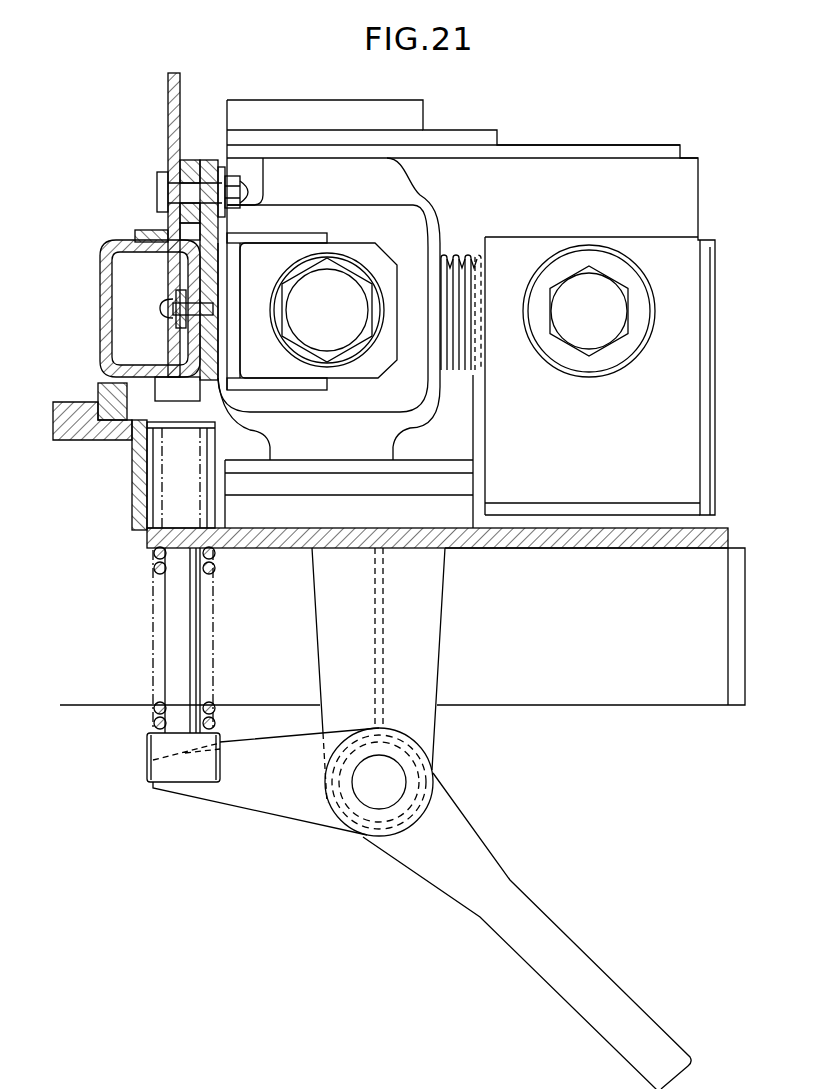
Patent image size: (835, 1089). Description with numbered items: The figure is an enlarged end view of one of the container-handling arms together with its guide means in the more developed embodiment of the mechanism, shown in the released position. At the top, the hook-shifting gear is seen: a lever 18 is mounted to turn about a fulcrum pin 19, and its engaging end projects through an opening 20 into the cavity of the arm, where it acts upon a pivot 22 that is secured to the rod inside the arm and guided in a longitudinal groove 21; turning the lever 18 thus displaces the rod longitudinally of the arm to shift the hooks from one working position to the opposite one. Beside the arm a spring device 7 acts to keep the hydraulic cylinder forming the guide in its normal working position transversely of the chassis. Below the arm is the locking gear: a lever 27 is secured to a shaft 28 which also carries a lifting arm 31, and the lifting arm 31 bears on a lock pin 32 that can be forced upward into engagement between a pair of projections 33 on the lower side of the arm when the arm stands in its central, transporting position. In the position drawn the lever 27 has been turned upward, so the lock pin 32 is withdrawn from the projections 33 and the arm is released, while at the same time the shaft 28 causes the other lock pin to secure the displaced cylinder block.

The spring device 7 is at (458, 252).
The lever 18 is at (170, 102).
The fulcrum pin 19 is at (162, 176).
The opening 20 is at (170, 256).
The longitudinal groove 21 is at (215, 310).
The pivot 22 is at (168, 308).
The lever 27 is at (470, 848).
The shaft 28 is at (378, 796).
The lifting arm 31 is at (275, 806).
The lock pin 32 is at (180, 636).
The projection 33 is at (175, 398).